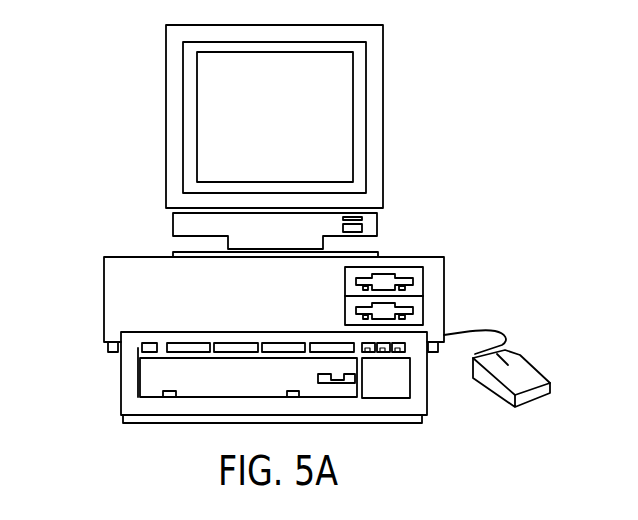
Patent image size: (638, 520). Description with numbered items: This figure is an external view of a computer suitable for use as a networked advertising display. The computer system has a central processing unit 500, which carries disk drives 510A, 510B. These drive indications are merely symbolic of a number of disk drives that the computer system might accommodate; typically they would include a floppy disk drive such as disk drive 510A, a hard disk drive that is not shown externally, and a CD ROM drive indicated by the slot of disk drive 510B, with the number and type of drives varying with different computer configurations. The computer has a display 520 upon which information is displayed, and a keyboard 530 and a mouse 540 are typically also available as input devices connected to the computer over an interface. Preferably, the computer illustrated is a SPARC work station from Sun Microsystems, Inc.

The central processing unit 500 is at (103, 280).
The disk drive 510A is at (343, 273).
The disk drive 510B is at (343, 303).
The display 520 is at (383, 118).
The keyboard 530 is at (120, 375).
The mouse 540 is at (538, 368).